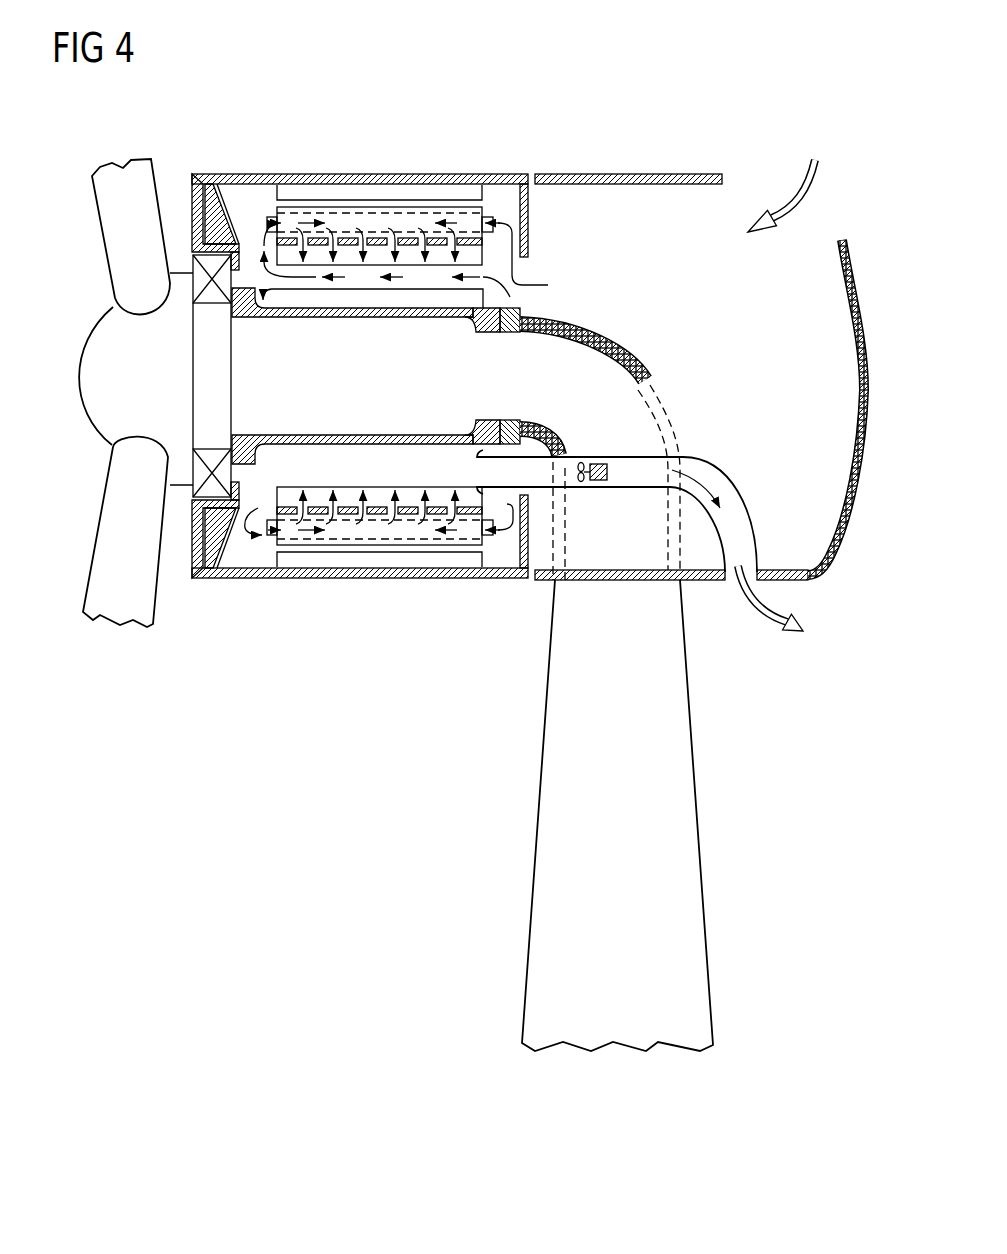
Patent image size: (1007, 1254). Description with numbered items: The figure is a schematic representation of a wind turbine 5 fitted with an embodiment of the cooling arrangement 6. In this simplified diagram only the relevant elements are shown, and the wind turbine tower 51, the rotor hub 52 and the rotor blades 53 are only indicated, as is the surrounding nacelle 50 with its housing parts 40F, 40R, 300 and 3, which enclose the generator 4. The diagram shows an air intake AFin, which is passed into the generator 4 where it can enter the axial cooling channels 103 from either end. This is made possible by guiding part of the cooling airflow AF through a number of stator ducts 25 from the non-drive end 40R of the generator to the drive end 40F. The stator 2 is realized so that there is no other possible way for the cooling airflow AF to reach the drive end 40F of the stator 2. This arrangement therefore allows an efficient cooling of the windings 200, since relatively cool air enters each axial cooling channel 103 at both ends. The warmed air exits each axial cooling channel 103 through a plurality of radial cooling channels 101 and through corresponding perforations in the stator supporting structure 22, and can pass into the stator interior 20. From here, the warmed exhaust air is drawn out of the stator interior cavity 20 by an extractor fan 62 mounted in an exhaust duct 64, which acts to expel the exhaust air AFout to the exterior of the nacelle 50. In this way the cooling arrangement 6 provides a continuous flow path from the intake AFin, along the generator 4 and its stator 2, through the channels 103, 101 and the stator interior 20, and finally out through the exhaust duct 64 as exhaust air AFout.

The wind turbine 5 is at (797, 90).
The drive end 40F is at (250, 187).
The nacelle bottom plate 3 is at (260, 576).
The nacelle roof plate 300 is at (442, 190).
The non-drive end 40R is at (498, 192).
The axial cooling channel 103 is at (372, 222).
The rotor blades 53 is at (108, 256).
The rotor hub 52 is at (102, 415).
The generator 4 is at (263, 381).
The stator 2 is at (330, 440).
The stator interior 20 is at (393, 268).
The stator supporting structure 22 is at (418, 245).
The radial cooling channels 101 is at (325, 247).
The stator ducts 25 is at (340, 283).
The windings 200 is at (470, 536).
The cooling airflow AF is at (248, 248).
The exhaust duct 64 is at (730, 520).
The extractor fan 62 is at (598, 462).
The cooling arrangement 6 is at (712, 445).
The nacelle 50 is at (838, 547).
The air intake AFin is at (808, 193).
The exhaust air AFout is at (758, 610).
The wind turbine tower 51 is at (690, 836).